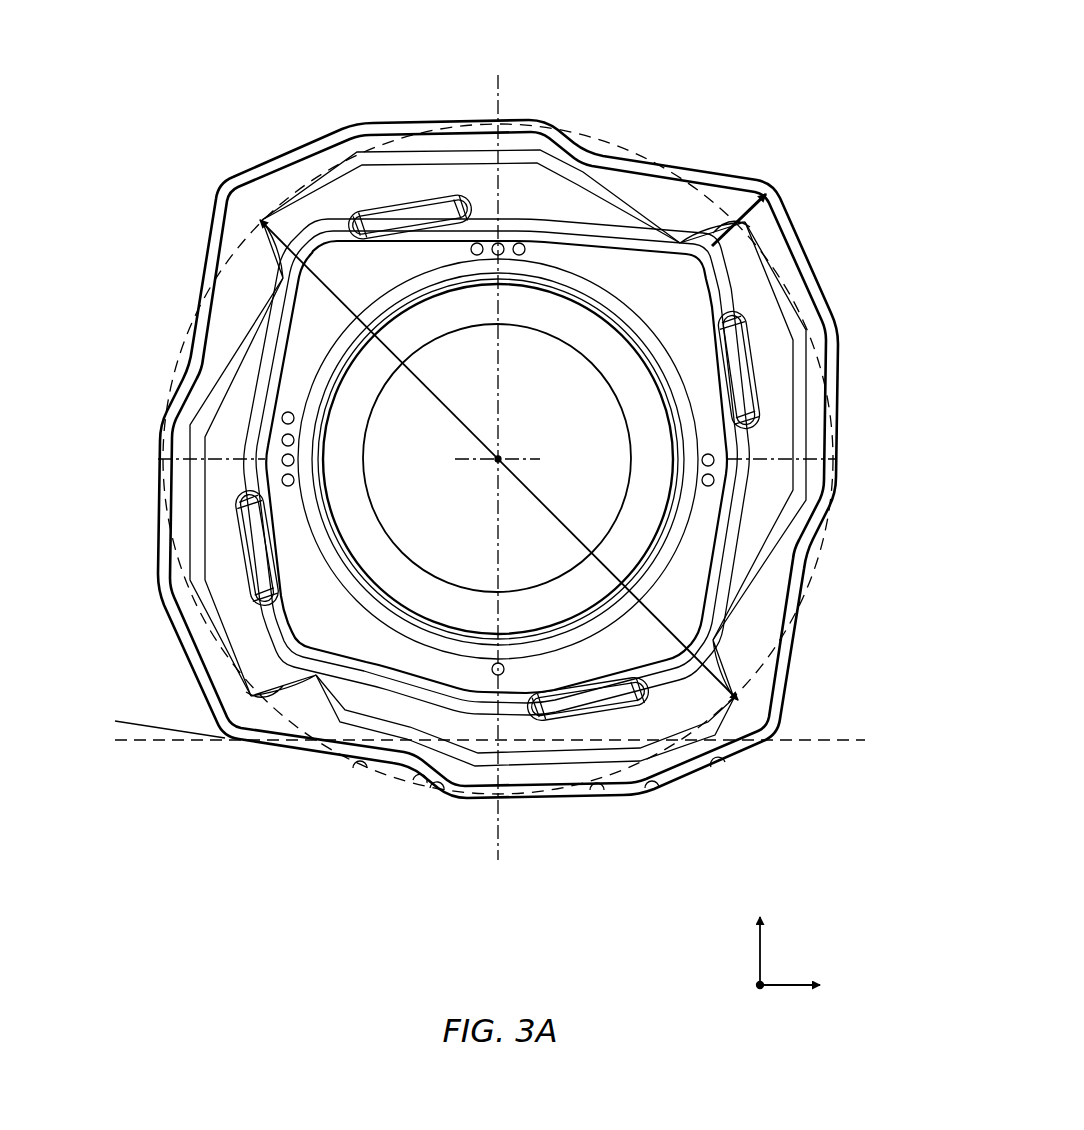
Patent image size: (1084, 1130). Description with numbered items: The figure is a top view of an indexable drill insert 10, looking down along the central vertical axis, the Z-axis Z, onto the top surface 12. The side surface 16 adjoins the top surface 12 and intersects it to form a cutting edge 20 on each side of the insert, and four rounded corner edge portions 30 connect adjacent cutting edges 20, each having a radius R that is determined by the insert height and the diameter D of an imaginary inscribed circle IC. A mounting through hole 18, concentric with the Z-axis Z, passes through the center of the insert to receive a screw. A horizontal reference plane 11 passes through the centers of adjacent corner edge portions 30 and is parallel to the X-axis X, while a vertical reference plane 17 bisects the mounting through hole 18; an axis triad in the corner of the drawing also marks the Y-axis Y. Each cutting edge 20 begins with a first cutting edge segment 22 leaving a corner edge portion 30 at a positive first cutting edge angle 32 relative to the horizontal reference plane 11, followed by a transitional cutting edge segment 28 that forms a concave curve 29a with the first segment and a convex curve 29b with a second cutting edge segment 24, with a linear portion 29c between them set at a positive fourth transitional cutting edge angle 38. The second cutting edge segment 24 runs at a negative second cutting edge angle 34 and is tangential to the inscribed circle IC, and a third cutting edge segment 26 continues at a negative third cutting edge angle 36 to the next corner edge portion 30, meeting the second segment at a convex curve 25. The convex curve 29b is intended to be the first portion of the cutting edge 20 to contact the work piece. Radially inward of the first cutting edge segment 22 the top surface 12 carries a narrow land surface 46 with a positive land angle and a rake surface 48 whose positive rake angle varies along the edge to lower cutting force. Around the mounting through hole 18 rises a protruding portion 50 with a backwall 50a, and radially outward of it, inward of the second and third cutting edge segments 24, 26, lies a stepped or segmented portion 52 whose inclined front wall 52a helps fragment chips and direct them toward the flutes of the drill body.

The indexable drill insert 10 is at (202, 88).
The horizontal reference plane 11 is at (846, 742).
The top surface 12 is at (669, 206).
The side surface 16 is at (516, 104).
The vertical reference plane 17 is at (532, 130).
The mounting through hole 18 is at (440, 341).
The cutting edge 20 is at (196, 280).
The first cutting edge segment 22 is at (358, 756).
The second cutting edge segment 24 is at (596, 790).
The convex curve 25 is at (652, 790).
The third cutting edge segment 26 is at (719, 765).
The transitional cutting edge segment 28 is at (438, 792).
The concave curve 29a is at (390, 767).
The convex curve 29b is at (451, 800).
The linear portion 29c is at (445, 795).
The corner edge portion 30 is at (220, 183).
The first cutting edge angle 32 is at (340, 764).
The second cutting edge angle 34 is at (541, 804).
The third cutting edge angle 36 is at (729, 765).
The fourth transitional cutting edge angle 38 is at (420, 788).
The land surface 46 is at (303, 152).
The rake surface 48 is at (253, 257).
The protruding portion 50 is at (594, 255).
The backwall 50a is at (568, 222).
The segmented portion 52 is at (386, 203).
The front wall 52a is at (432, 208).
The diameter D is at (499, 460).
The radius R is at (758, 242).
The imaginary inscribed circle IC is at (813, 590).
The Z-axis Z is at (540, 420).
The X-axis X is at (803, 985).
The Y axis Y is at (761, 934).